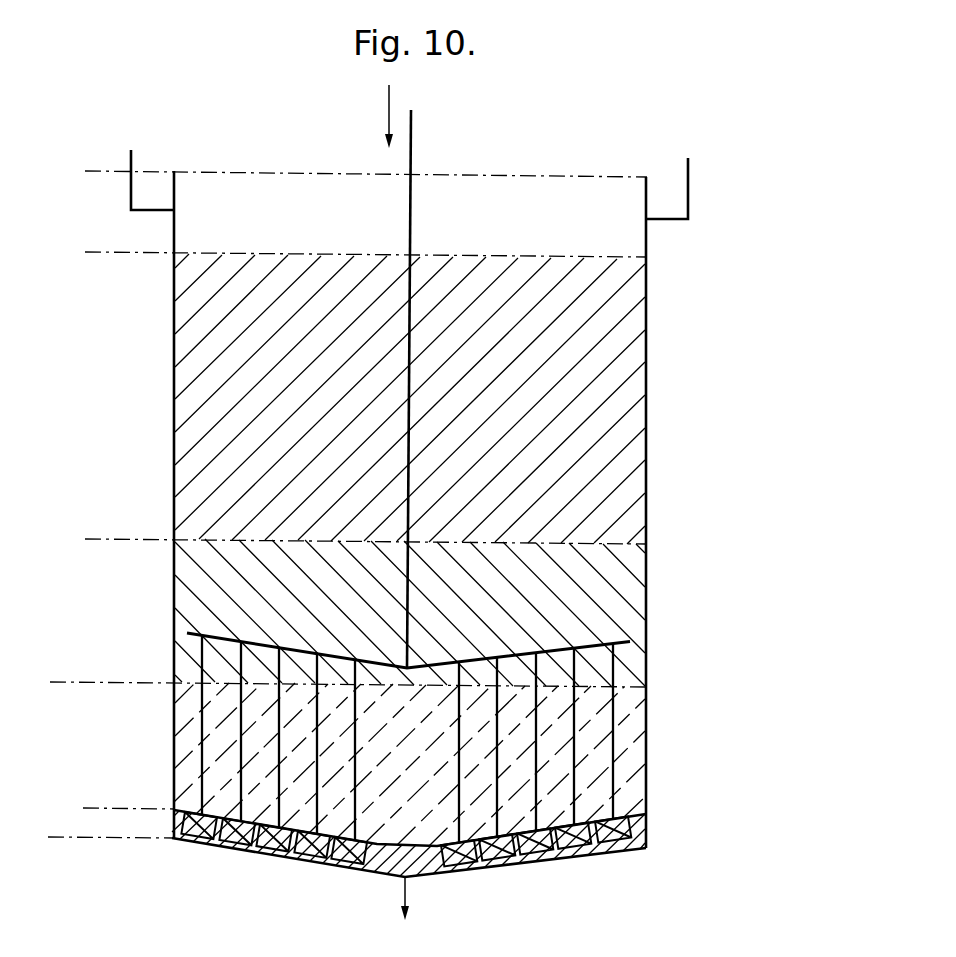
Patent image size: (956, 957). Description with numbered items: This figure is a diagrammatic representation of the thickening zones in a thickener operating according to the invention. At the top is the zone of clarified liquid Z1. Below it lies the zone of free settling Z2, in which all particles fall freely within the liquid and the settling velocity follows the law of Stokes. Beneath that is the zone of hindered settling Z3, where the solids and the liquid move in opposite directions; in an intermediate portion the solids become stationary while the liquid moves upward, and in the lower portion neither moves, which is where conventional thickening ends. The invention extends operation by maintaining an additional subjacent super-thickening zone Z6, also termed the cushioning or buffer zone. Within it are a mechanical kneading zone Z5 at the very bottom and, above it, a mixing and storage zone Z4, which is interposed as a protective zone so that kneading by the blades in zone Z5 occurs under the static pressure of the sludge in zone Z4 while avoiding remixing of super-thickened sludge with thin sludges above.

The zone of clarified liquid Z1 is at (98, 171).
The zone of free settling Z2 is at (97, 252).
The zone of hindered settling Z3 is at (96, 539).
The mixing and storage zone Z4 is at (94, 682).
The mechanical kneading zone Z5 is at (93, 858).
The super-thickening zone Z6 is at (55, 682).